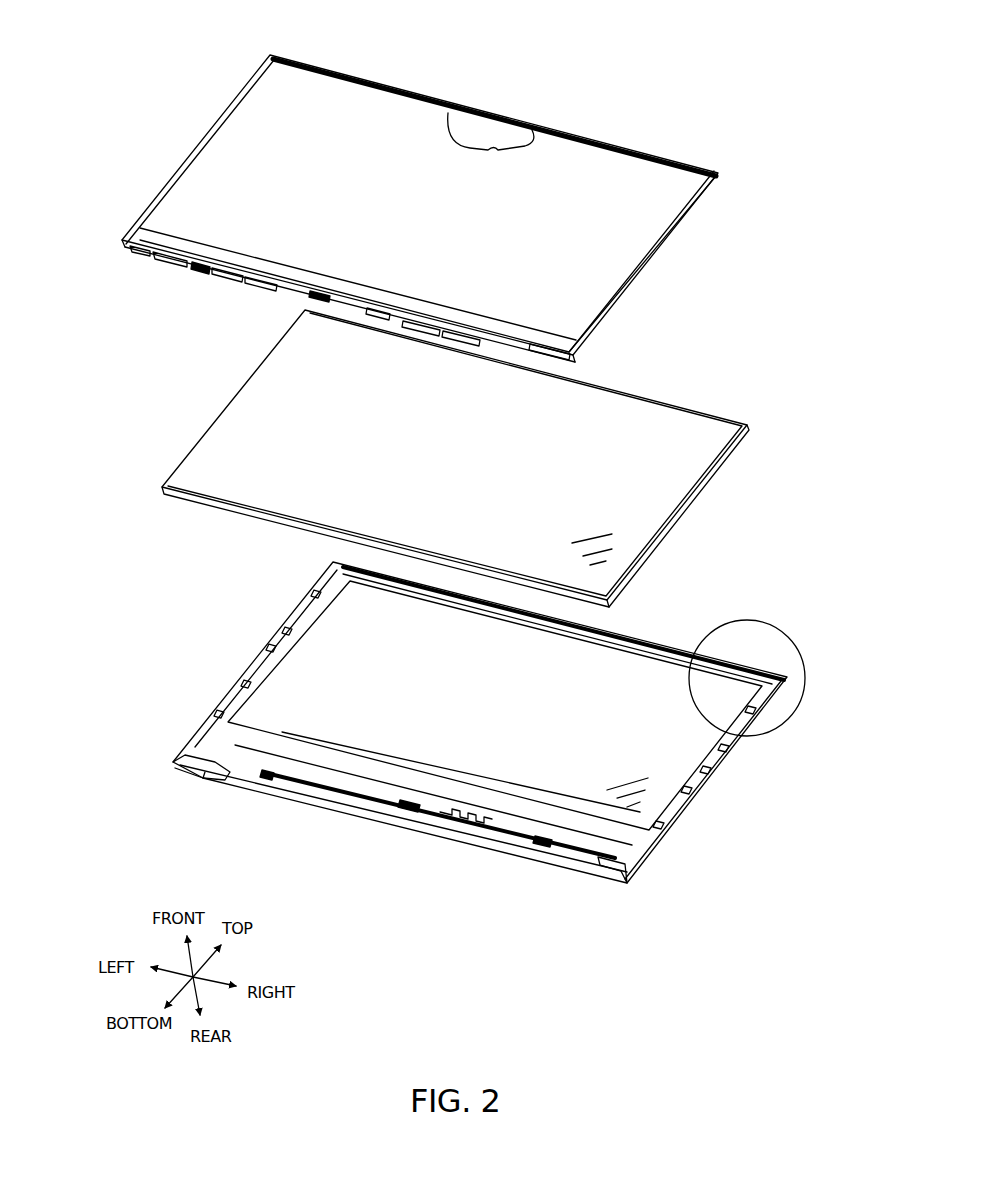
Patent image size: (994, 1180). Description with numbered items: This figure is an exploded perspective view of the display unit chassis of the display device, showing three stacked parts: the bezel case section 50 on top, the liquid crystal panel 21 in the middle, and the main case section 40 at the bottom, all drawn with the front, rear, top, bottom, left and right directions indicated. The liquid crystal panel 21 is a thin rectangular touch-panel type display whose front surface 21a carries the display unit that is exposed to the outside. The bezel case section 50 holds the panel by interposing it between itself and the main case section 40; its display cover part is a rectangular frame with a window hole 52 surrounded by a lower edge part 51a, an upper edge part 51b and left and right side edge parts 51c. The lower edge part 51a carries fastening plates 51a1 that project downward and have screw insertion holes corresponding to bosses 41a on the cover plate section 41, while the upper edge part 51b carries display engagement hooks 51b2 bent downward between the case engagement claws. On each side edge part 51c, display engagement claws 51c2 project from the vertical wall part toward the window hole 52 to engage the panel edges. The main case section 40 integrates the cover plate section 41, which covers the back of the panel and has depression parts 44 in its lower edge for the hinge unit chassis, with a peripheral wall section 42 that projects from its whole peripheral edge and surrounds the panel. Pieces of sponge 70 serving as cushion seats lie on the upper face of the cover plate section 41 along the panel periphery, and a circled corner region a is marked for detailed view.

The bezel case section 50 is at (231, 74).
The window hole 52 is at (567, 160).
The lower edge part 51a is at (349, 285).
The fastening plate 51a1 is at (212, 272).
The upper edge part 51b is at (502, 113).
The display engagement hook 51b2 is at (491, 147).
The side edge part 51c is at (227, 100).
The display engagement claw 51c2 is at (244, 92).
The liquid crystal panel 21 is at (229, 372).
The front surface 21a is at (688, 422).
The main case section 40 is at (289, 578).
The cover plate section 41 is at (665, 787).
The boss 41a is at (268, 774).
The peripheral wall section 42 is at (296, 600).
The depression part 44 is at (295, 800).
The piece of sponge 70 is at (304, 622).
The detail region a is at (758, 620).